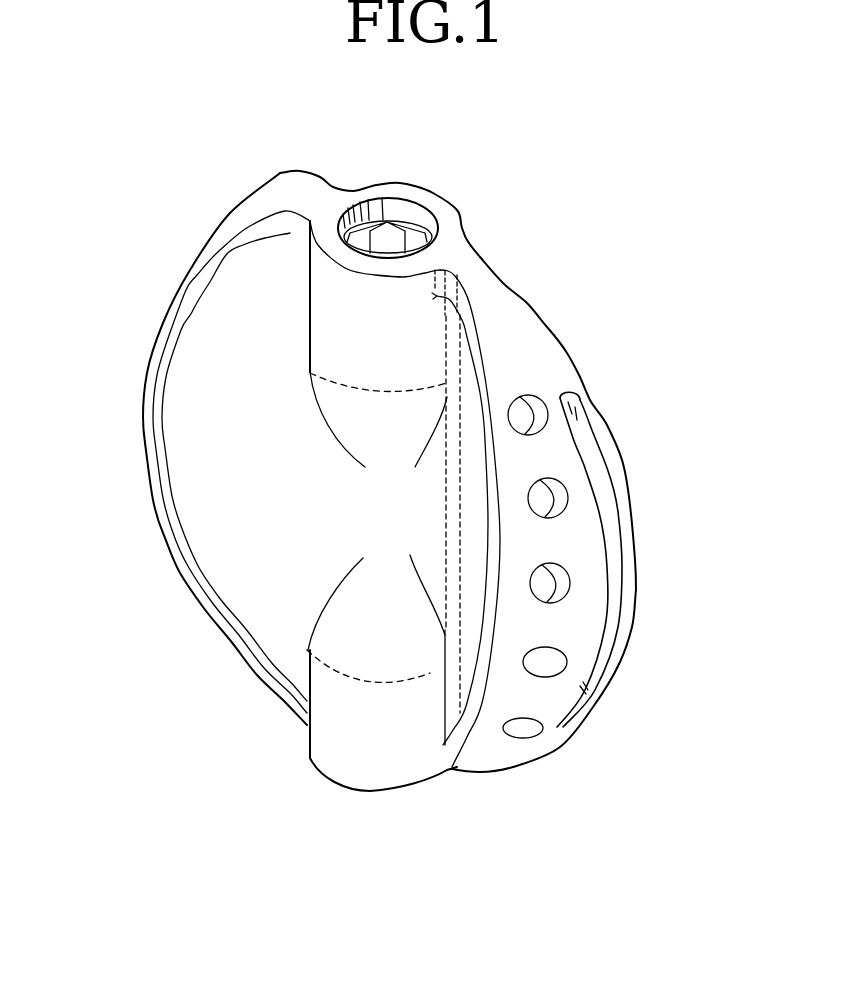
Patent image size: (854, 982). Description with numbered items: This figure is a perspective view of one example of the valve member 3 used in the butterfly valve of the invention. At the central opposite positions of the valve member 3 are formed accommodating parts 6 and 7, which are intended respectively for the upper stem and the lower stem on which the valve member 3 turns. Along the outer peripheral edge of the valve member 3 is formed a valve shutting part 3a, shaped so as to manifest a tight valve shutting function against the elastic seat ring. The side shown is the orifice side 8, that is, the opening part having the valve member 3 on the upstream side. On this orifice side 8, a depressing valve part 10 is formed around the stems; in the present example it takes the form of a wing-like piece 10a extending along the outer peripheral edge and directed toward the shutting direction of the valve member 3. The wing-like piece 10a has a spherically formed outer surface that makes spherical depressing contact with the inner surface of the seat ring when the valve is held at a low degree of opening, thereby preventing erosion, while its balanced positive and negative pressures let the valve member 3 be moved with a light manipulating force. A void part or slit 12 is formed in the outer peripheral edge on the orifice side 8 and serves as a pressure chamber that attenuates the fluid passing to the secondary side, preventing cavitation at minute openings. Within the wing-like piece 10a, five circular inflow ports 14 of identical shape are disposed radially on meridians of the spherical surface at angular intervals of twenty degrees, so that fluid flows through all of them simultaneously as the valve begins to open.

The valve member 3 is at (158, 527).
The valve shutting part 3a is at (636, 570).
The accommodating part 6 is at (417, 217).
The accommodating part 7 is at (370, 790).
The orifice side 8 is at (642, 600).
The depressing valve part 10 is at (555, 625).
The wing-like piece 10a is at (535, 695).
The void part (slit) 12 is at (603, 504).
The inflow ports 14 is at (528, 400).